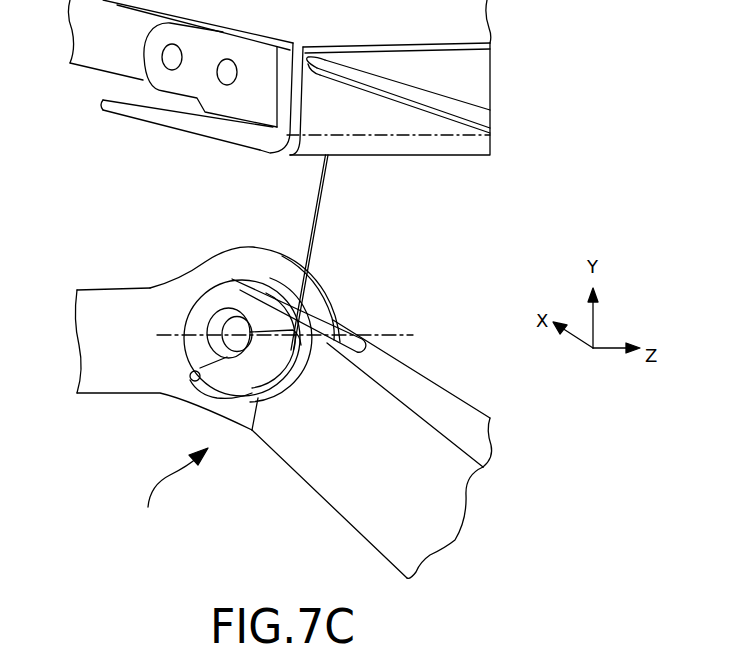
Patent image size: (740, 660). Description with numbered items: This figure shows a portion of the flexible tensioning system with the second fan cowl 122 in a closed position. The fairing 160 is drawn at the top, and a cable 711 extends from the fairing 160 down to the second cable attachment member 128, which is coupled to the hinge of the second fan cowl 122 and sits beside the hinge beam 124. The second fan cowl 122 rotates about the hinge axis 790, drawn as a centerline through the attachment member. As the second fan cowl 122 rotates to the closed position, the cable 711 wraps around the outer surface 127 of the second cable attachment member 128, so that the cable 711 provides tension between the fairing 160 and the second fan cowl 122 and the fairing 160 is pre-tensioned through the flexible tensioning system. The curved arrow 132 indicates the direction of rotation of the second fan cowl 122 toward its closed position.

The fairing 160 is at (325, 34).
The cable 711 is at (325, 200).
The hinge axis 790 is at (387, 335).
The hinge beam 124 is at (142, 368).
The second fan cowl 122 is at (388, 465).
The outer surface 127 is at (295, 370).
The second cable attachment member 128 is at (213, 385).
The rotation direction 132 is at (170, 497).